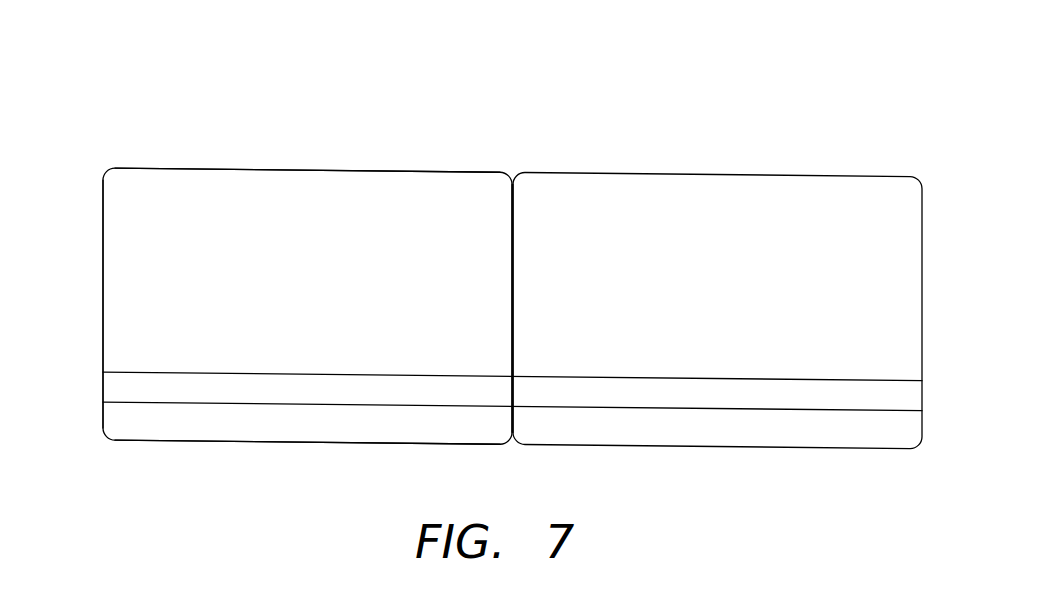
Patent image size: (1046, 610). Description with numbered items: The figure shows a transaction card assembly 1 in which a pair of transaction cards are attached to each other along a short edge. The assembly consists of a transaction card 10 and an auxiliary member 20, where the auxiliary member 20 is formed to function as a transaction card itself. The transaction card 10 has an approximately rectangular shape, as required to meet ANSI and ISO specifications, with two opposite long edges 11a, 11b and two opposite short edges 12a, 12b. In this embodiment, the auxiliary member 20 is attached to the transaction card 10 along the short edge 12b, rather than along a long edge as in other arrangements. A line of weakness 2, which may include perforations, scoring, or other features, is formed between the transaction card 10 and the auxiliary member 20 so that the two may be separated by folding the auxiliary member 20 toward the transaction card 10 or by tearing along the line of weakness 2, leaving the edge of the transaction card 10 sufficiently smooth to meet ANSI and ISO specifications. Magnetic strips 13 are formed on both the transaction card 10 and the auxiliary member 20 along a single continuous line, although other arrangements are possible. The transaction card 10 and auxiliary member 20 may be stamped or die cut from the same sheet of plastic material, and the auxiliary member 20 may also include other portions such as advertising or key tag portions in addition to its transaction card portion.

The transaction card assembly 1 is at (212, 84).
The line of weakness 2 is at (512, 214).
The transaction card 10 is at (397, 172).
The auxiliary member 20 is at (767, 177).
The long edge 11a is at (405, 444).
The long edge 11b is at (273, 168).
The short edge 12a is at (103, 210).
The short edge 12b is at (513, 180).
The magnetic strips 13 is at (797, 408).